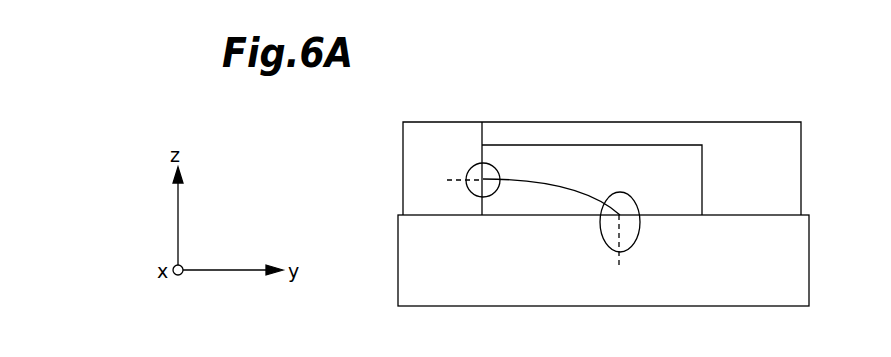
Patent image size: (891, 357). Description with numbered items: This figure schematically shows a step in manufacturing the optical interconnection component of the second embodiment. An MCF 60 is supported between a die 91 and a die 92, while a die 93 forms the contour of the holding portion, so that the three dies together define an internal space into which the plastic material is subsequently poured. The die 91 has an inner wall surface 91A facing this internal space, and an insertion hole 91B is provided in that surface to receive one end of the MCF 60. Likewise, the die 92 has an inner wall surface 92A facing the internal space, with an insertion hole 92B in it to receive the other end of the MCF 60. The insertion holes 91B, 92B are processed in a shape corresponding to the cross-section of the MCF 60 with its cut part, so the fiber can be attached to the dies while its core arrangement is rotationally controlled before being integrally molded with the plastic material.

The MCF 60 is at (573, 188).
The die 91 is at (433, 138).
The inner wall surface 91A is at (485, 177).
The insertion hole 91B is at (447, 180).
The die 92 is at (798, 250).
The inner wall surface 92A is at (635, 215).
The insertion hole 92B is at (620, 252).
The die 93 is at (801, 147).